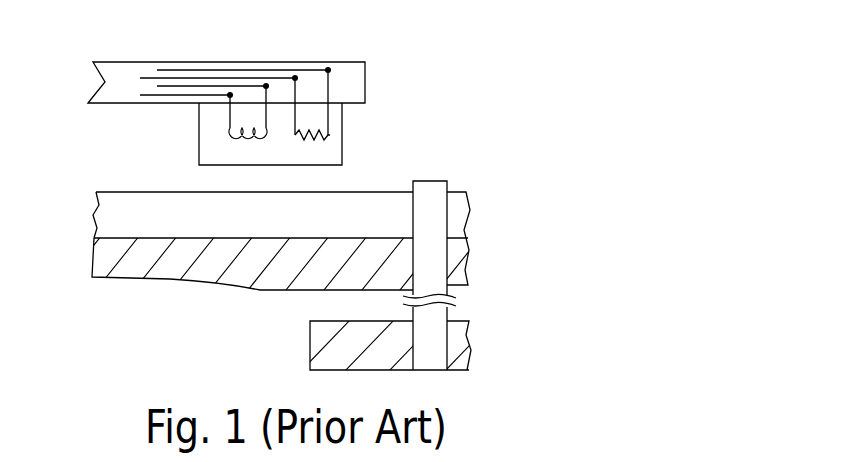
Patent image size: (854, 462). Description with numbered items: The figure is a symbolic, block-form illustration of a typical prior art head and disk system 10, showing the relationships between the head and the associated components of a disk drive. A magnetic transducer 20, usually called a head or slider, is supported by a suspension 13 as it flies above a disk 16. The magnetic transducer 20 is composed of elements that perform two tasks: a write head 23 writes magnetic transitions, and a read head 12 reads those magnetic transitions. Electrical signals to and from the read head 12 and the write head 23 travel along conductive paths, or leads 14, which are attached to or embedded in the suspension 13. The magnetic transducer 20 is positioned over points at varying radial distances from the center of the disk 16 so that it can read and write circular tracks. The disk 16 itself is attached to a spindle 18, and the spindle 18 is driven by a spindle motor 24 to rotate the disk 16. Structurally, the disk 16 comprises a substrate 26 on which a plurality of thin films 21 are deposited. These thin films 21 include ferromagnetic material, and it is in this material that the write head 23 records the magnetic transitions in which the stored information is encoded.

The head and disk system 10 is at (445, 88).
The read head 12 is at (341, 134).
The suspension 13 is at (357, 90).
The conductive paths (leads) 14 is at (323, 92).
The disk 16 is at (104, 182).
The spindle 18 is at (440, 190).
The magnetic transducer 20 is at (345, 158).
The thin films 21 is at (281, 238).
The write head 23 is at (226, 137).
The spindle motor 24 is at (318, 350).
The substrate 26 is at (118, 268).